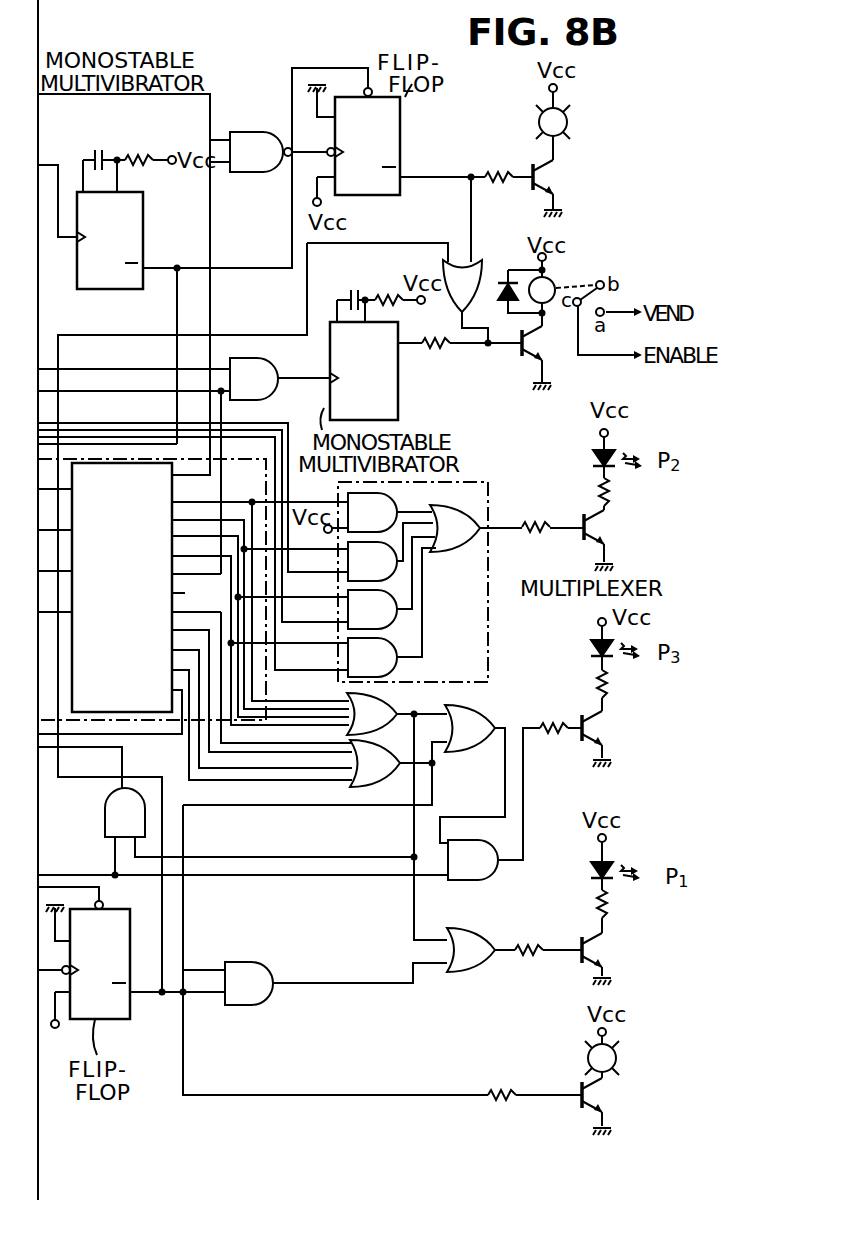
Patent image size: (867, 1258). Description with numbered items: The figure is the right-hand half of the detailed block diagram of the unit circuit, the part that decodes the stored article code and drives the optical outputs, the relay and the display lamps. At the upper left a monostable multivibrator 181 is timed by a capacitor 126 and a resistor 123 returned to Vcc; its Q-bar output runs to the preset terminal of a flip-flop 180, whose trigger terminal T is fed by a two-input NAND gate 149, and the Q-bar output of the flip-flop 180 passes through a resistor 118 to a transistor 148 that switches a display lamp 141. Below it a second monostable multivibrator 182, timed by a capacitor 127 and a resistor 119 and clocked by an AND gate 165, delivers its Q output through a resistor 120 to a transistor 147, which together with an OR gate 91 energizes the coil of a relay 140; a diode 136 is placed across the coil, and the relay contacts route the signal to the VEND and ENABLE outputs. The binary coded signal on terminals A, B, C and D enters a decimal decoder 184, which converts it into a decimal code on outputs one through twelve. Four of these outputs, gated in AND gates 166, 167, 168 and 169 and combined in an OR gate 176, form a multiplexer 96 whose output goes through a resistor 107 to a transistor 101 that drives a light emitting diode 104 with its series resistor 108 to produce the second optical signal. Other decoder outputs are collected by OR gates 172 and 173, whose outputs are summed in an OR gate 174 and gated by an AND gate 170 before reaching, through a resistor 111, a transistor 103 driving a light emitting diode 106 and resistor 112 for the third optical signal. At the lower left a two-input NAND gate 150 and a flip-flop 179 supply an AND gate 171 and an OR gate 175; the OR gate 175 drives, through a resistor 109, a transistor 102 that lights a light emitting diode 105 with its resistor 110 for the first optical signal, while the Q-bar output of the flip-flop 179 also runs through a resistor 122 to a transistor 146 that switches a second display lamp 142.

The monostable multivibrator 181 is at (143, 215).
The capacitor 126 is at (96, 150).
The resistor 123 is at (144, 152).
The two-input NAND gate 149 is at (250, 172).
The flip-flop 180 is at (400, 135).
The resistor 118 is at (498, 170).
The display lamp 141 is at (570, 122).
The transistor 148 is at (555, 177).
The OR gate 91 is at (462, 286).
The diode 136 is at (510, 280).
The relay 140 is at (555, 270).
The transistor 147 is at (532, 362).
The monostable multivibrator 182 is at (398, 395).
The capacitor 127 is at (352, 290).
The resistor 119 is at (388, 292).
The resistor 120 is at (440, 350).
The AND gate 165 is at (254, 379).
The decimal decoder 184 is at (135, 712).
The multiplexer 96 is at (488, 652).
The AND gate 166 is at (372, 512).
The AND gate 167 is at (372, 561).
The AND gate 168 is at (372, 609).
The AND gate 169 is at (372, 657).
The OR gate 176 is at (447, 553).
The light emitting diode 104 is at (592, 456).
The resistor 108 is at (612, 488).
The resistor 107 is at (538, 518).
The transistor 101 is at (606, 528).
The light emitting diode 106 is at (590, 650).
The resistor 112 is at (612, 688).
The transistor 103 is at (604, 728).
The resistor 111 is at (552, 740).
The OR gate 172 is at (395, 700).
The OR gate 173 is at (375, 787).
The OR gate 174 is at (480, 705).
The AND gate 170 is at (473, 860).
The two-input NAND gate 150 is at (105, 812).
The flip-flop 179 is at (115, 1019).
The AND gate 171 is at (249, 983).
The OR gate 175 is at (463, 972).
The resistor 109 is at (530, 960).
The light emitting diode 105 is at (590, 877).
The resistor 110 is at (632, 905).
The transistor 102 is at (606, 948).
The resistor 122 is at (505, 1088).
The display lamp 142 is at (618, 1058).
The transistor 146 is at (605, 1095).